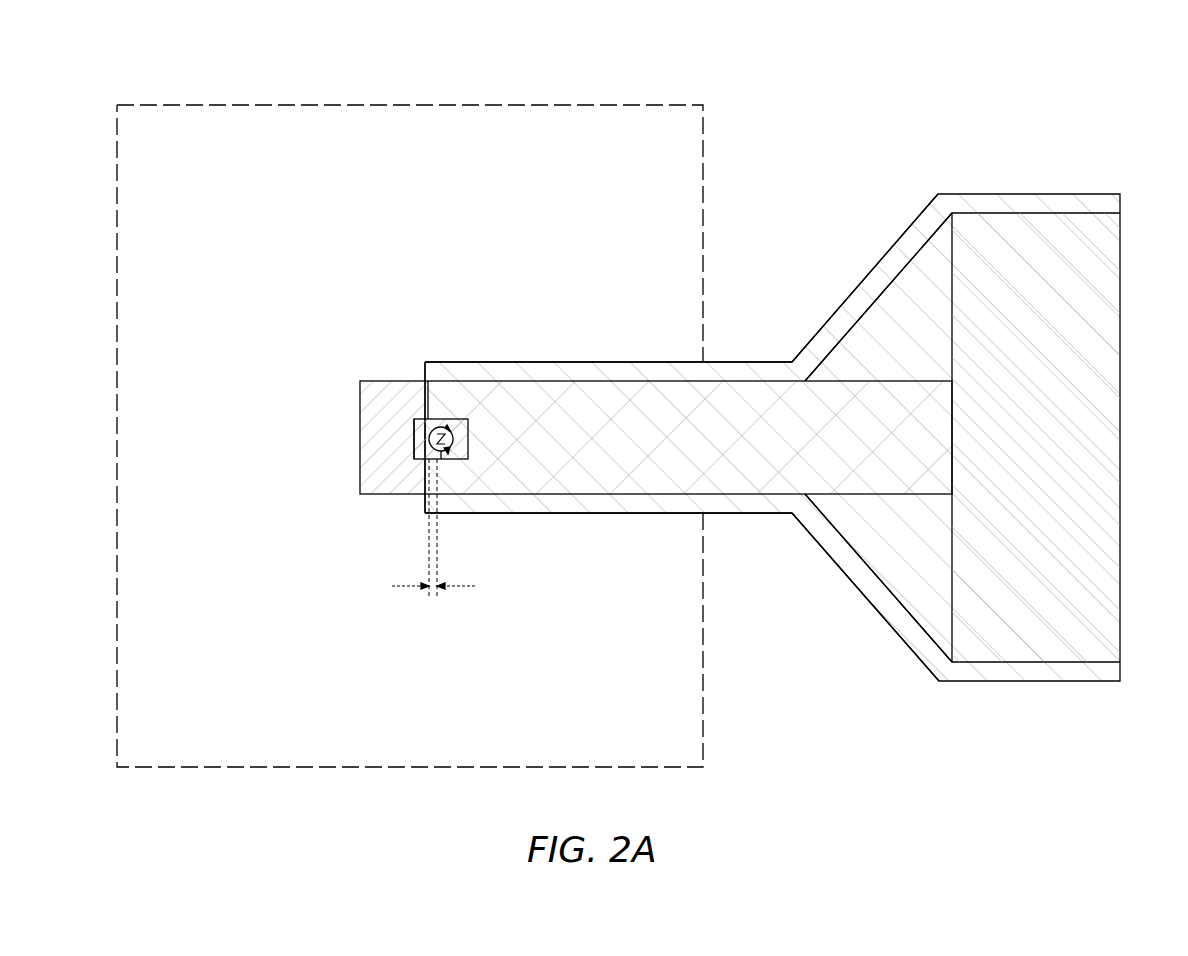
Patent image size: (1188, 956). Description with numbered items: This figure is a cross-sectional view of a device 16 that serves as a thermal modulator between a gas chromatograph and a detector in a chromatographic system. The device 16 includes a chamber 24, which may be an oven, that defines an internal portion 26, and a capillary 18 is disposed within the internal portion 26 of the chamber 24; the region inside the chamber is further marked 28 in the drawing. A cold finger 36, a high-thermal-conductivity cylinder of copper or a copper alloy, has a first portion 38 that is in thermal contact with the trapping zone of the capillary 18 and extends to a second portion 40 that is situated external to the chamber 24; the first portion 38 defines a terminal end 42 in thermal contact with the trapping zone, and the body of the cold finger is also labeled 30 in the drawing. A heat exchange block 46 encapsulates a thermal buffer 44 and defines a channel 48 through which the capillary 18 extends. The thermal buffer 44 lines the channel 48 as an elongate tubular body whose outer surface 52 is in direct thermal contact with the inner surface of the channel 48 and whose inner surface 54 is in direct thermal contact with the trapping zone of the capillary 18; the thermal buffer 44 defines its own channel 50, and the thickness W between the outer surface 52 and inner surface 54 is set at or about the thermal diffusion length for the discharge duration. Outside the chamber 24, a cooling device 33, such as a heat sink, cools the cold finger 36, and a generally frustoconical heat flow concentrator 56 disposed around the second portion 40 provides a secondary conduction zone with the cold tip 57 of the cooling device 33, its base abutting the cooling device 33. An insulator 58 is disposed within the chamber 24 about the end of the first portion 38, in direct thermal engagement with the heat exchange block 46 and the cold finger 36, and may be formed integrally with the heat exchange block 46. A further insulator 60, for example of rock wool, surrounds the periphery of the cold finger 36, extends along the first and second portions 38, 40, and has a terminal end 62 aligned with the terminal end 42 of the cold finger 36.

The device 16 is at (765, 63).
The capillary 18 is at (441, 427).
The chamber 24 is at (147, 103).
The internal portion 26 is at (422, 227).
The fluid 28 is at (422, 72).
The core 30 is at (650, 494).
The cooling device 33 is at (1085, 212).
The cold finger 36 is at (726, 374).
The first portion 38 is at (603, 378).
The second portion 40 is at (770, 380).
The terminal end 42 is at (425, 503).
The thermal buffer 44 is at (445, 427).
The heat exchange block 46 is at (450, 432).
The channel 48 is at (446, 450).
The channel 50 is at (443, 455).
The outer surface 52 is at (414, 438).
The inner surface 54 is at (428, 419).
The heat flow concentrator 56 is at (905, 285).
The cold tip 57 is at (950, 437).
The insulator 58 is at (360, 398).
The insulator 60 is at (750, 503).
The terminal end 62 is at (425, 372).
The fiber width W is at (422, 528).